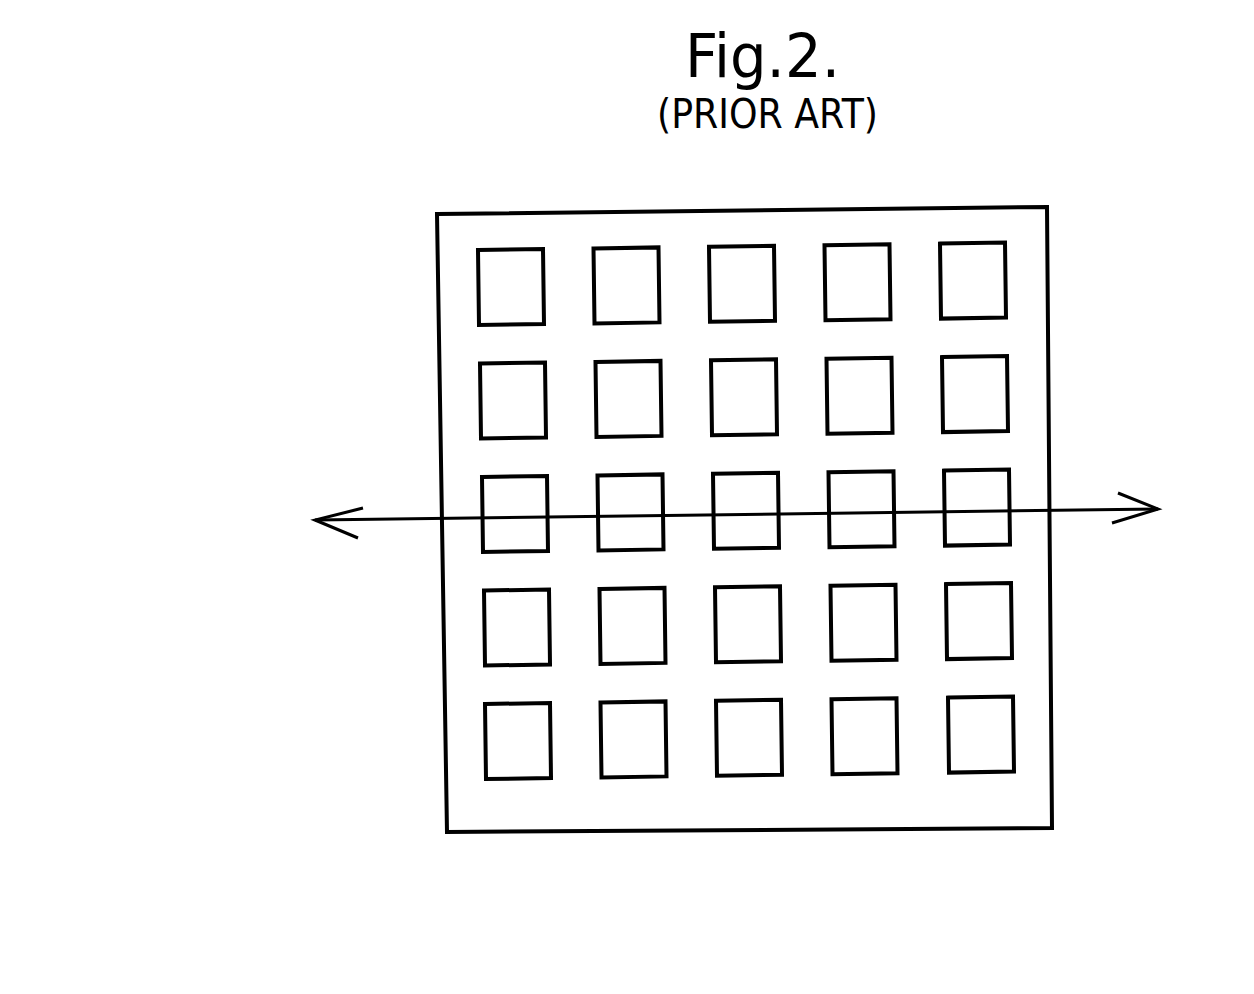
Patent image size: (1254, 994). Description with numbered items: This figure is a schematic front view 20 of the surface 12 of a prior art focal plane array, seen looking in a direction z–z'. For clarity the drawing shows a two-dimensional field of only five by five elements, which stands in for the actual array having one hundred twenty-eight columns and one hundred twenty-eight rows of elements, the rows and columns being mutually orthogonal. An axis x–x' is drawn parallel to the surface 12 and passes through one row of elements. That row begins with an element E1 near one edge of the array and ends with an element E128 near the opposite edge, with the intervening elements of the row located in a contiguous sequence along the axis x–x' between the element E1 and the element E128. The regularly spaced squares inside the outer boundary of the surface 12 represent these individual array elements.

The surface 12 is at (925, 226).
The front view 20 is at (332, 316).
The element E1 is at (504, 532).
The element E128 is at (980, 525).